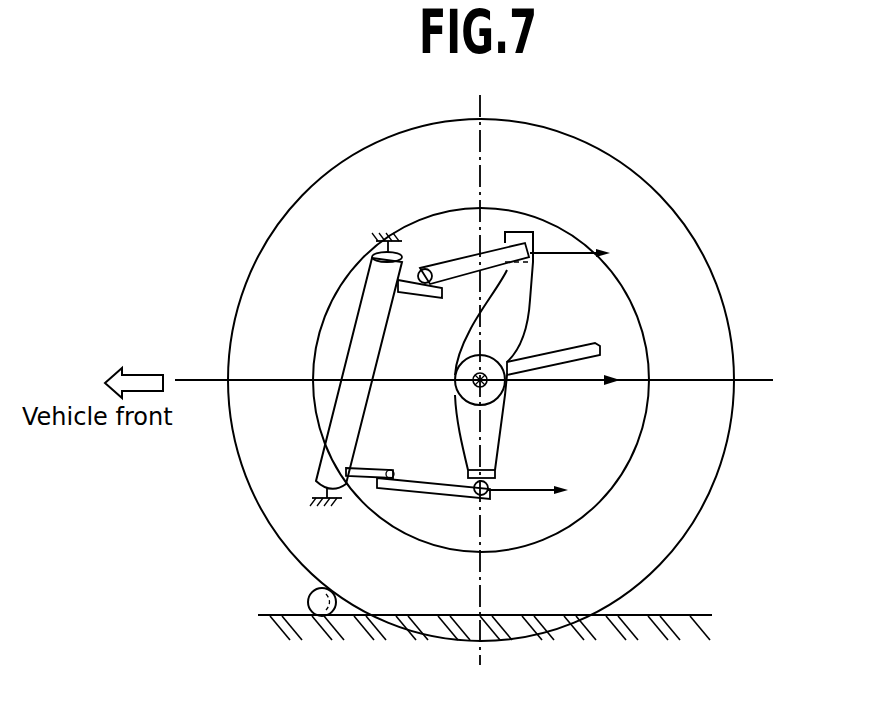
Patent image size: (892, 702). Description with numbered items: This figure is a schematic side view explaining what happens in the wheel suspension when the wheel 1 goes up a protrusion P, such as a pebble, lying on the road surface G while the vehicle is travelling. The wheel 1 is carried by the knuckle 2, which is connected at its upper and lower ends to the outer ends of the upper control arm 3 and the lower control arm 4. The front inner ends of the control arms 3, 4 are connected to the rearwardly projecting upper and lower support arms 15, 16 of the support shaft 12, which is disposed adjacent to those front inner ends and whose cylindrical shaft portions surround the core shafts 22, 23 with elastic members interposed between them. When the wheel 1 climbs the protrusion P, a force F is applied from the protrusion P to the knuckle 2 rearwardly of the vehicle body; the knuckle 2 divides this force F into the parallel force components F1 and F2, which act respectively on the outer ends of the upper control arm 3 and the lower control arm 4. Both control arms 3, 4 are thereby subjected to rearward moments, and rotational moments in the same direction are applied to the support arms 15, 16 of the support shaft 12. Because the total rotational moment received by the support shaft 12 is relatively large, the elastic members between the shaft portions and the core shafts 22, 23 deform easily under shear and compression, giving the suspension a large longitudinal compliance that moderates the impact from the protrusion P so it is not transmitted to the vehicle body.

The wheel 1 is at (623, 163).
The knuckle 2 is at (515, 317).
The upper control arm 3 is at (458, 262).
The lower control arm 4 is at (436, 497).
The support shaft 12 is at (350, 362).
The upper support arm 15 is at (410, 296).
The lower support arm 16 is at (370, 467).
The core shaft 22 is at (378, 247).
The core shaft 23 is at (318, 490).
The force F is at (580, 380).
The force component F1 is at (565, 253).
The force component F2 is at (528, 490).
The road surface G is at (656, 614).
The protrusion P is at (308, 600).